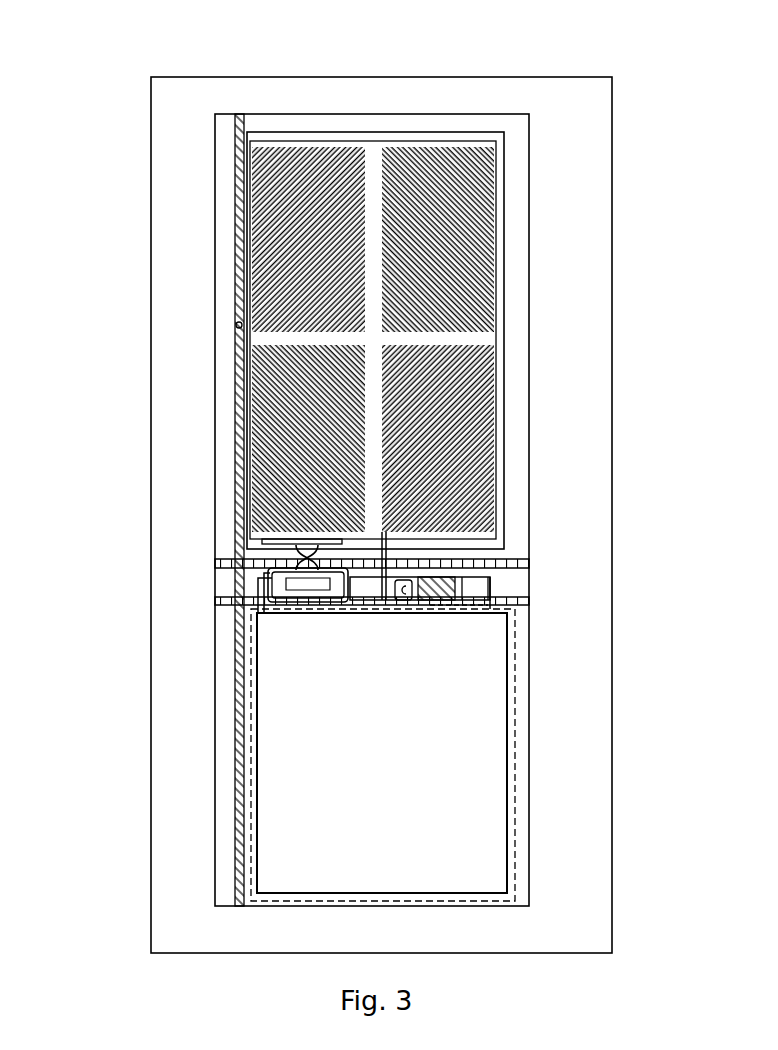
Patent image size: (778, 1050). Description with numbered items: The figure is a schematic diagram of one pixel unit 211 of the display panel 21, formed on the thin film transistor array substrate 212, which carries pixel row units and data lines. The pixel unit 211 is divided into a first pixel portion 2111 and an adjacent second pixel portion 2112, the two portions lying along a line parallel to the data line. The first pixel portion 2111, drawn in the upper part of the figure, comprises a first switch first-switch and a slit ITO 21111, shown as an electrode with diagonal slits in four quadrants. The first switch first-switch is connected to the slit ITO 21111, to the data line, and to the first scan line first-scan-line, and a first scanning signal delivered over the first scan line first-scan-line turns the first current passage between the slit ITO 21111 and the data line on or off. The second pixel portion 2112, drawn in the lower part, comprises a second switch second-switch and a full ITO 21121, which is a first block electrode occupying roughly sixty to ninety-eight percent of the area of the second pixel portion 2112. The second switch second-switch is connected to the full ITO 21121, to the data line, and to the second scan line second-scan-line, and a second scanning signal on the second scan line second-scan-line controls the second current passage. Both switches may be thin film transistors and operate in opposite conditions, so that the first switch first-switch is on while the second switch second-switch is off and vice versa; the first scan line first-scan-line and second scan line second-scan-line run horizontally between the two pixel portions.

The display panel 21 is at (334, 52).
The thin film transistor array substrate 212 is at (562, 133).
The pixel unit 211 is at (76, 290).
The first pixel portion 2111 is at (246, 228).
The slit ITO 21111 is at (497, 292).
The second pixel portion 2112 is at (242, 763).
The full ITO 21121 is at (465, 815).
The first switch first-switch is at (266, 574).
The second switch second-switch is at (488, 598).
The first scan line first-scan-line is at (523, 553).
The second scan line second-scan-line is at (525, 613).